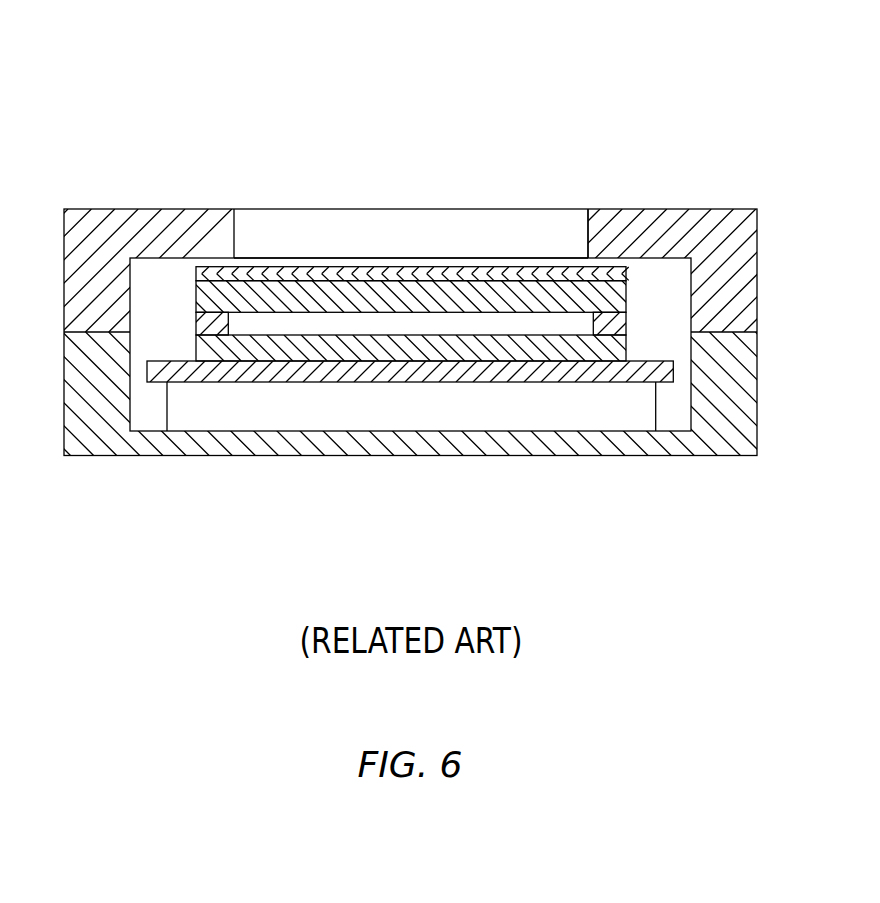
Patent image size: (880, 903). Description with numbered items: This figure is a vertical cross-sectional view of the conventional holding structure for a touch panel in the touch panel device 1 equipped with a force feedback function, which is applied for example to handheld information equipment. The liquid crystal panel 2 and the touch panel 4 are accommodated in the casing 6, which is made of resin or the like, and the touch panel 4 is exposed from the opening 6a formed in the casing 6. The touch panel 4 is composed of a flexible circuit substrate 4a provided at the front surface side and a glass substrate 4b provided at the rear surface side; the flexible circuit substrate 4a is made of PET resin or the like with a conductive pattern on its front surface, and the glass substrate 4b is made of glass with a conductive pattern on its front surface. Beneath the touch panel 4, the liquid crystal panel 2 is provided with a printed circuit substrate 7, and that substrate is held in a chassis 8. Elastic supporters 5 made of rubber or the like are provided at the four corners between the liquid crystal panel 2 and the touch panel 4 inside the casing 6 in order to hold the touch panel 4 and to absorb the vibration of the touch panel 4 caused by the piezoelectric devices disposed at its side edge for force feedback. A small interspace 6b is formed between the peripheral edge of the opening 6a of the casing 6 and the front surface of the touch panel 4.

The touch panel device 1 is at (688, 100).
The liquid crystal panel 2 is at (433, 350).
The touch panel 4 is at (414, 206).
The flexible circuit substrate 4a is at (355, 275).
The glass substrate 4b is at (472, 285).
The elastic supporter 5 is at (605, 322).
The casing 6 is at (710, 237).
The opening 6a is at (588, 237).
The interspace 6b is at (288, 265).
The printed circuit substrate 7 is at (330, 373).
The chassis 8 is at (656, 405).